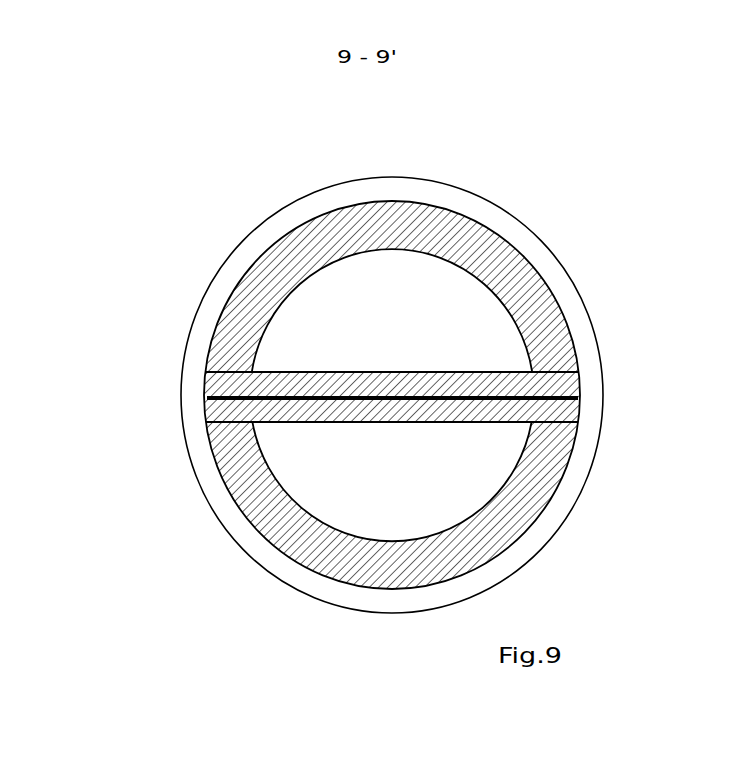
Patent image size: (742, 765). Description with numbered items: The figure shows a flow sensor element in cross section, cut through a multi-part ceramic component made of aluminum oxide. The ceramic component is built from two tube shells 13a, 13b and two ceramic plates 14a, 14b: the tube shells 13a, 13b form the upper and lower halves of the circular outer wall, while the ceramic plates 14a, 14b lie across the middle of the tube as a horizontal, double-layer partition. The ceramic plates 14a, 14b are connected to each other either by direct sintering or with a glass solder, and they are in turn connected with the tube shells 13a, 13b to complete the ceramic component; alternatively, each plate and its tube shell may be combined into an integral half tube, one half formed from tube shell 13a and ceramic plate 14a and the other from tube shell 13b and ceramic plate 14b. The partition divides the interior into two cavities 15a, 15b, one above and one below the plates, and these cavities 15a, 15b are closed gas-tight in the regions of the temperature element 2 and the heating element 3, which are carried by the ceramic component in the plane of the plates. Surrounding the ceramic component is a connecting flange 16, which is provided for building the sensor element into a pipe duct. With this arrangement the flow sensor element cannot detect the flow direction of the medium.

The temperature element 2 is at (312, 390).
The heating element 3 is at (502, 368).
The tube shell 13a is at (495, 230).
The tube shell 13b is at (542, 462).
The ceramic plate 14a is at (232, 383).
The ceramic plate 14b is at (212, 423).
The cavity 15a is at (369, 310).
The cavity 15b is at (358, 470).
The connecting flange 16 is at (593, 383).